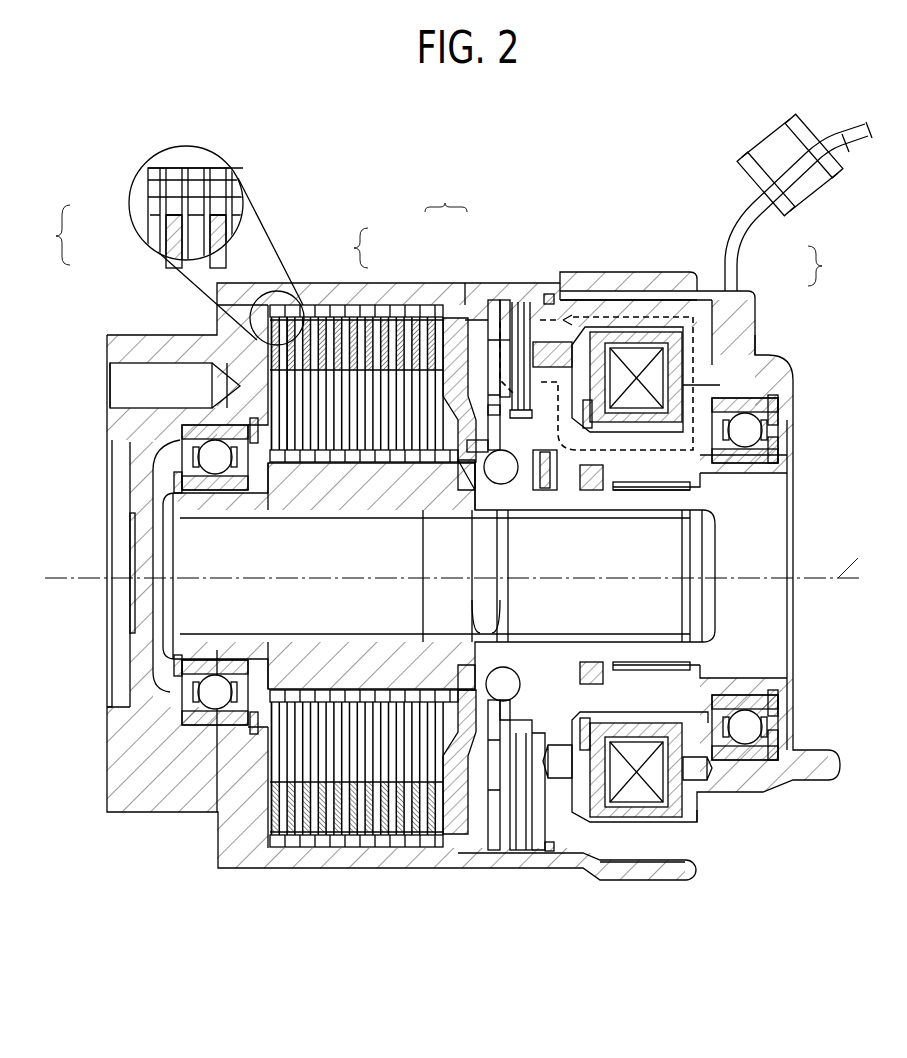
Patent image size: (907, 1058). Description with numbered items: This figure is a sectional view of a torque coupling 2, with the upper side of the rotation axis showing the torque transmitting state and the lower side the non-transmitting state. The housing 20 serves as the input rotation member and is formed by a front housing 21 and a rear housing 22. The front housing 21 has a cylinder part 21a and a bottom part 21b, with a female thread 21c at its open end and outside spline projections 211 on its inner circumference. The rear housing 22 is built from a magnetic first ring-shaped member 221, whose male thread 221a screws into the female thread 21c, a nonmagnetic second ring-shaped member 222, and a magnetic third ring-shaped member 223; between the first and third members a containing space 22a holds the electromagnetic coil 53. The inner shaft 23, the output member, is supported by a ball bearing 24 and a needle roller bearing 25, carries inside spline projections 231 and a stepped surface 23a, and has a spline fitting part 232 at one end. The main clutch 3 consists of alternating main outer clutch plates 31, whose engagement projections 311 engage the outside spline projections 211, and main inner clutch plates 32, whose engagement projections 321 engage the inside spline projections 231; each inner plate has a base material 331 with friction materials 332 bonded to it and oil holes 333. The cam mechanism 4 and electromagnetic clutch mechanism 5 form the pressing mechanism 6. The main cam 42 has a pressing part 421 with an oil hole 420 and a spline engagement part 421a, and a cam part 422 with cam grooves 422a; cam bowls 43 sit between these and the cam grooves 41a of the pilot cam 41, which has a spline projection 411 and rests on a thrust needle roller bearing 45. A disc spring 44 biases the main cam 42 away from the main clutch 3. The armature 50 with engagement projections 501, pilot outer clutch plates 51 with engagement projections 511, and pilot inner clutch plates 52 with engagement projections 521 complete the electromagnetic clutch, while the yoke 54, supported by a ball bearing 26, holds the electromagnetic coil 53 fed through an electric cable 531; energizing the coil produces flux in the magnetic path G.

The torque coupling 2 is at (468, 528).
The main clutch 3 is at (268, 555).
The cam mechanism 4 is at (486, 310).
The electromagnetic clutch mechanism 5 is at (512, 300).
The pressing mechanism 6 is at (498, 301).
The housing 20 is at (460, 511).
The front housing 21 is at (425, 555).
The cylinder part 21a is at (340, 290).
The bottom part 21b is at (140, 778).
The female thread 21c is at (680, 290).
The rear housing 22 is at (707, 511).
The containing space 22a is at (714, 826).
The inner shaft 23 is at (506, 576).
The stepped surface 23a is at (415, 640).
The ball bearing 24 is at (183, 478).
The needle roller bearing 25 is at (690, 488).
The ball bearing 26 is at (780, 406).
The main outer clutch plates 31 is at (165, 200).
The main inner clutch plates 32 is at (250, 534).
The pilot cam 41 is at (540, 462).
The cam grooves 41a is at (548, 470).
The main cam 42 is at (423, 339).
The cam bowls 43 is at (505, 472).
The disc spring 44 is at (462, 465).
The thrust needle roller bearing 45 is at (570, 665).
The armature 50 is at (498, 832).
The pilot outer clutch plates 51 is at (545, 853).
The pilot inner clutch plates 52 is at (547, 853).
The electromagnetic coil 53 is at (660, 372).
The yoke 54 is at (780, 384).
The outside spline projections 211 is at (188, 183).
The first ring-shaped member 221 is at (610, 298).
The male thread 221a is at (640, 852).
The second ring-shaped member 222 is at (549, 295).
The third ring-shaped member 223 is at (780, 468).
The inside spline projections 231 is at (330, 690).
The spline fitting part 232 is at (627, 640).
The engagement projections 311 is at (165, 183).
The engagement projections 321 is at (338, 462).
The base material 331 is at (157, 230).
The friction materials 332 is at (152, 213).
The oil holes 333 is at (180, 397).
The spline projection 411 is at (482, 850).
The oil hole 420 is at (450, 415).
The pressing part 421 is at (452, 300).
The spline engagement part 421a is at (435, 455).
The cam part 422 is at (458, 302).
The cam grooves 422a is at (505, 472).
The engagement projections 501 is at (505, 835).
The engagement projections 511 is at (515, 842).
The engagement projections 521 is at (510, 750).
The electric cable 531 is at (742, 217).
The magnetic path G is at (648, 314).